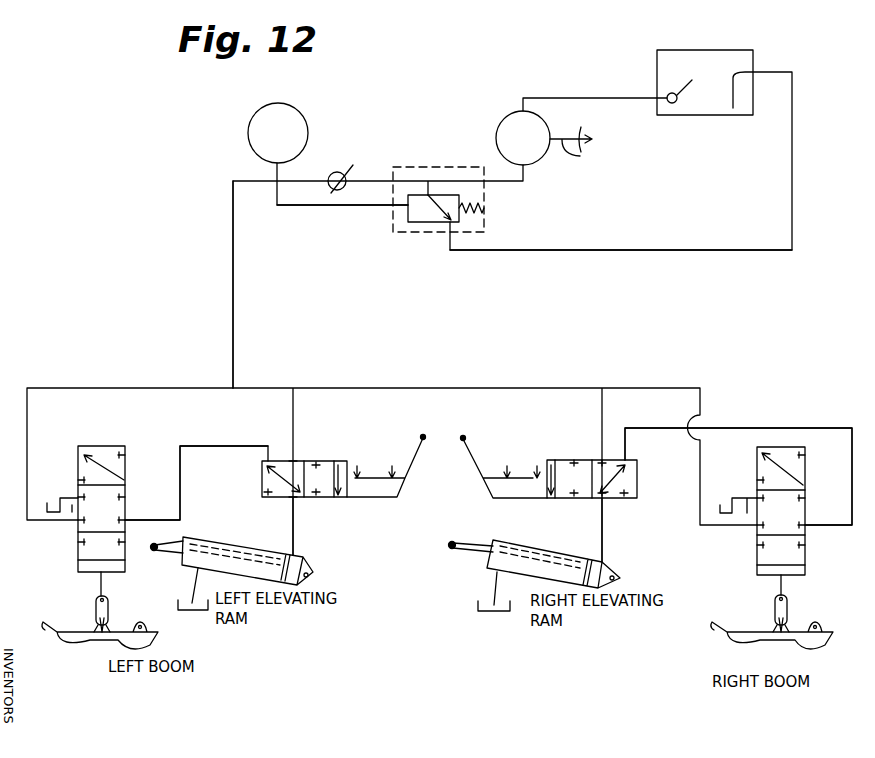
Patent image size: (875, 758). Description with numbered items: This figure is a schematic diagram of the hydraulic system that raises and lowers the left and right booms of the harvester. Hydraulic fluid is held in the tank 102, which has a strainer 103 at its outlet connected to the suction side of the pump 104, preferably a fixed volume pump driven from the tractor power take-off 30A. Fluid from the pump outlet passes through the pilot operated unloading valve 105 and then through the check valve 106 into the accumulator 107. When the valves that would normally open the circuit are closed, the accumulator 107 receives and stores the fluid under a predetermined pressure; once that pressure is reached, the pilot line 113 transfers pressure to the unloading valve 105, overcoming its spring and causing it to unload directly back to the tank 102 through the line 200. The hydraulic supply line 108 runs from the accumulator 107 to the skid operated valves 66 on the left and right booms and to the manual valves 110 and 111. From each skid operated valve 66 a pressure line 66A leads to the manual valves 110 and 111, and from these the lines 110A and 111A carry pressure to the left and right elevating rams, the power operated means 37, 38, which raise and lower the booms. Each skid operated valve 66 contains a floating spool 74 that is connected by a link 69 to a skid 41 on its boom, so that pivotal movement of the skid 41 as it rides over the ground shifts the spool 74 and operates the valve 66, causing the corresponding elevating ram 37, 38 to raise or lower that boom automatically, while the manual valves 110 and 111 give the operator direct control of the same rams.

The tank 102 is at (718, 40).
The strainer 103 is at (694, 81).
The pump 104 is at (504, 122).
The pilot operated unloading valve 105 is at (484, 212).
The check valve 106 is at (343, 172).
The accumulator 107 is at (248, 122).
The hydraulic supply line 108 is at (232, 292).
The pilot line 113 is at (335, 205).
The line 200 is at (672, 238).
The power take-off 30A is at (583, 152).
The skid operated valve 66 is at (100, 446).
The pressure line 66A is at (182, 492).
The manual valve 110 is at (332, 461).
The line 110A is at (294, 520).
The manual valve 111 is at (568, 460).
The line 111A is at (602, 535).
The elevating ram 37 is at (255, 548).
The elevating ram 38 is at (178, 540).
The floating spool 74 is at (108, 594).
The link 69 is at (95, 600).
The skid 41 is at (93, 643).